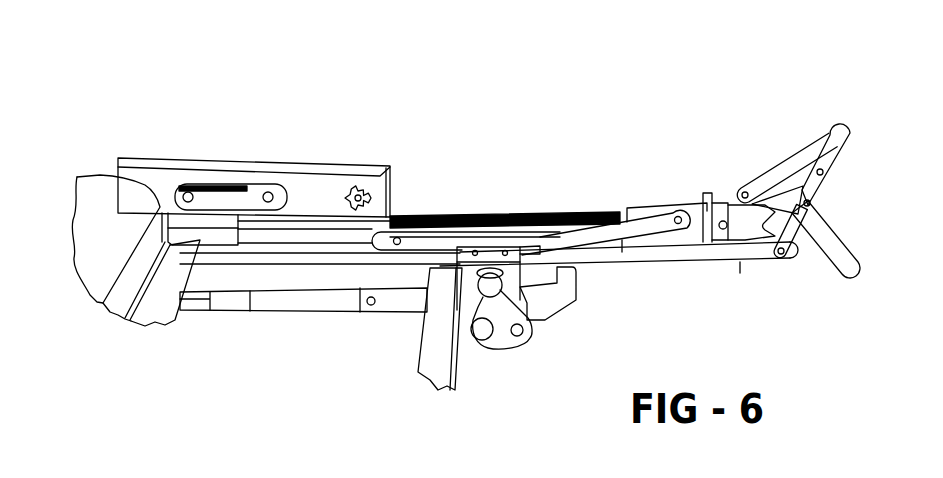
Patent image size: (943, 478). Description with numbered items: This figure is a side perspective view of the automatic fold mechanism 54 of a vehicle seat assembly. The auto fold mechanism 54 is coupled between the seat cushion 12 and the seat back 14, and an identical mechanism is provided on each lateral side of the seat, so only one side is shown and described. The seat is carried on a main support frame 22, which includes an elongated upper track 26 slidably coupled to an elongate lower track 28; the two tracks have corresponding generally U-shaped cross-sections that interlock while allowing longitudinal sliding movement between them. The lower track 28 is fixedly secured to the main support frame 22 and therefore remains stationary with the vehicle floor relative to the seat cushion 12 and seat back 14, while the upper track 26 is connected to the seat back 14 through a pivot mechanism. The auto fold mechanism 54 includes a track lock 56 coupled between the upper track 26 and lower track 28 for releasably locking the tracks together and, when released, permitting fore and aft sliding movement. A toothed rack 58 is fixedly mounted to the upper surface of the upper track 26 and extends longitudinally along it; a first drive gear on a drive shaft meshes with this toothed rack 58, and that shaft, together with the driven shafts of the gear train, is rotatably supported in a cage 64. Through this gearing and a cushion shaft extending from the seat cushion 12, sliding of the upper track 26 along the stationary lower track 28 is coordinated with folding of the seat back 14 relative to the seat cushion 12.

The seat cushion 12 is at (99, 177).
The seat back 14 is at (832, 132).
The main support frame 22 is at (172, 332).
The upper track 26 is at (702, 250).
The lower track 28 is at (304, 262).
The automatic fold mechanism 54 is at (415, 193).
The track lock 56 is at (583, 238).
The toothed rack 58 is at (520, 215).
The cage 64 is at (281, 161).